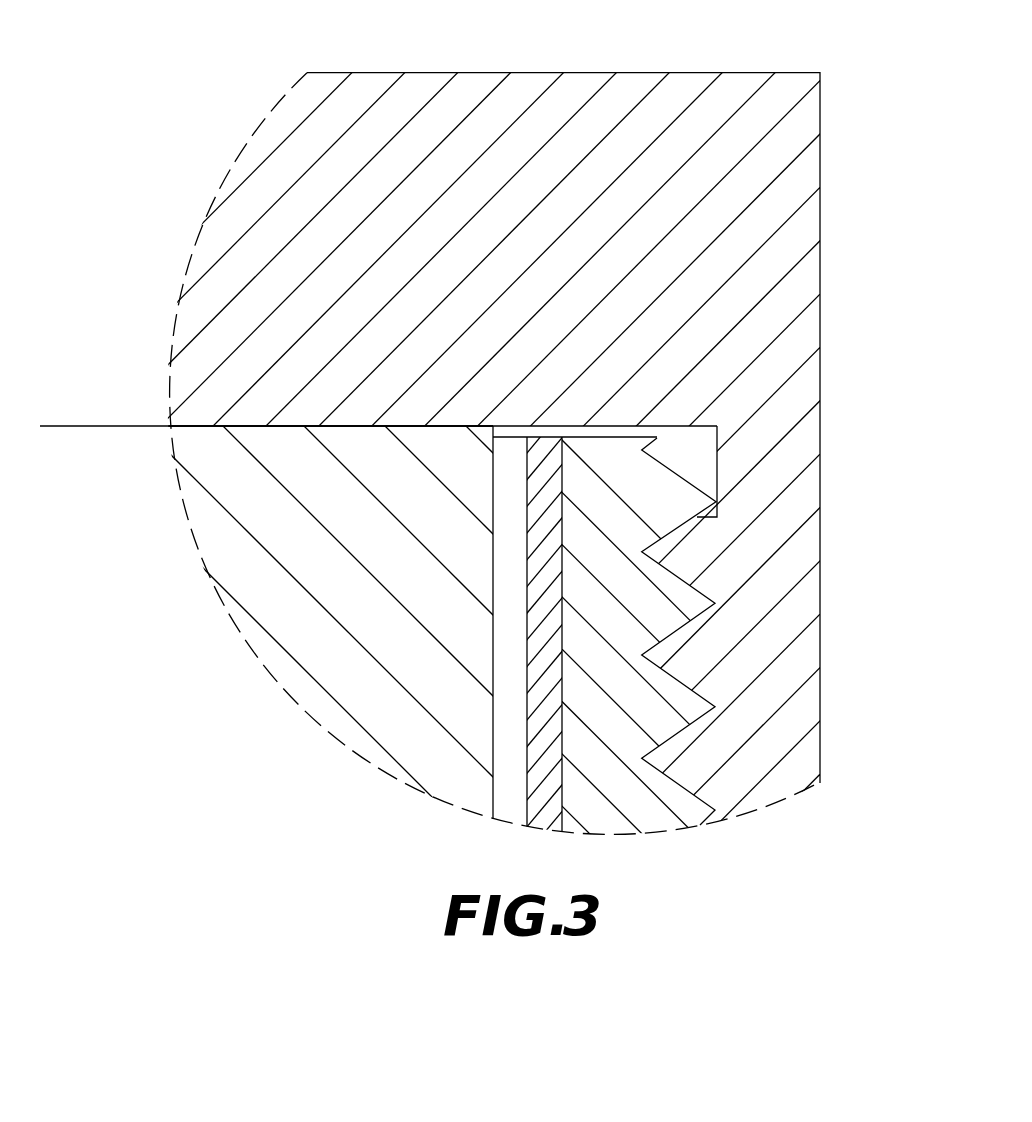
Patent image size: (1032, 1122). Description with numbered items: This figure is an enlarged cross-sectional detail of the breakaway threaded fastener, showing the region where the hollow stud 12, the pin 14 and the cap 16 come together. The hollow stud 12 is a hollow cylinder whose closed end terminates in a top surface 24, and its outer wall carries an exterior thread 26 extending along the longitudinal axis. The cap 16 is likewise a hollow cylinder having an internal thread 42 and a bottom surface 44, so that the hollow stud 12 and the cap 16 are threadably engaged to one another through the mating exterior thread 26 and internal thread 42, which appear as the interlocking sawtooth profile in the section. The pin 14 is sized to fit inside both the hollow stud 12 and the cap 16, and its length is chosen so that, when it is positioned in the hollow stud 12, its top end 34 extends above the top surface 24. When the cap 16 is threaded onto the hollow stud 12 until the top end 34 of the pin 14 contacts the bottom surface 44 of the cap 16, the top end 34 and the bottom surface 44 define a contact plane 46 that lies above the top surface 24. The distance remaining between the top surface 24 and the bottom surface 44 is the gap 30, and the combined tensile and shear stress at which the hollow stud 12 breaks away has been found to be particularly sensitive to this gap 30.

The hollow stud 12 is at (648, 852).
The pin 14 is at (334, 672).
The cap 16 is at (534, 60).
The top surface 24 is at (618, 437).
The gap 30 is at (690, 436).
The exterior thread 26 is at (783, 631).
The internal thread 42 is at (680, 783).
The top end 34 is at (243, 436).
The bottom surface 44 is at (243, 416).
The contact plane 46 is at (106, 426).